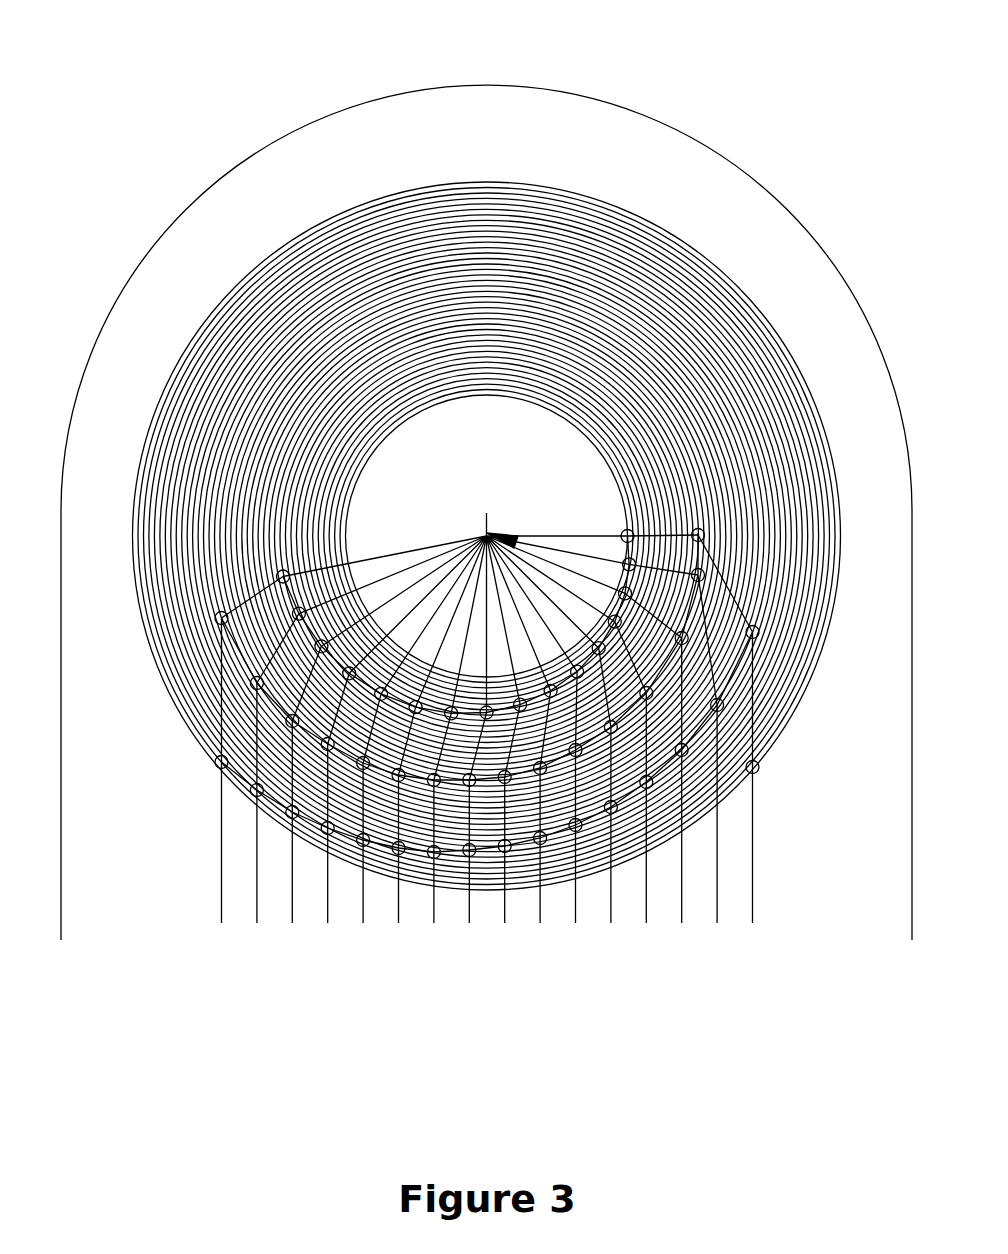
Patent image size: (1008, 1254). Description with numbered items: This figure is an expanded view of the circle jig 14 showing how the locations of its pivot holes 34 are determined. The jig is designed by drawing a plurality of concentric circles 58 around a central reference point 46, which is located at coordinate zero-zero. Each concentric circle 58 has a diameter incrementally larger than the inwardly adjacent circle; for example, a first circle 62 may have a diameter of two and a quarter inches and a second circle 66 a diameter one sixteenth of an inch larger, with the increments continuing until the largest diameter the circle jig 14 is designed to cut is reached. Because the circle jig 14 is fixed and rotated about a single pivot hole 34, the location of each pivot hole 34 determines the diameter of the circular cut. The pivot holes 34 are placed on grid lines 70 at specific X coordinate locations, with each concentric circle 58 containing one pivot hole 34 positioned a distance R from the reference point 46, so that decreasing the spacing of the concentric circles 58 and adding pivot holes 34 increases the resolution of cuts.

The circle jig 14 is at (772, 203).
The pivot hole 34 is at (626, 533).
The reference point 46 is at (486, 535).
The concentric circles 58 is at (393, 185).
The first circle 62 is at (475, 392).
The second circle 66 is at (497, 388).
The grid lines 70 is at (753, 902).